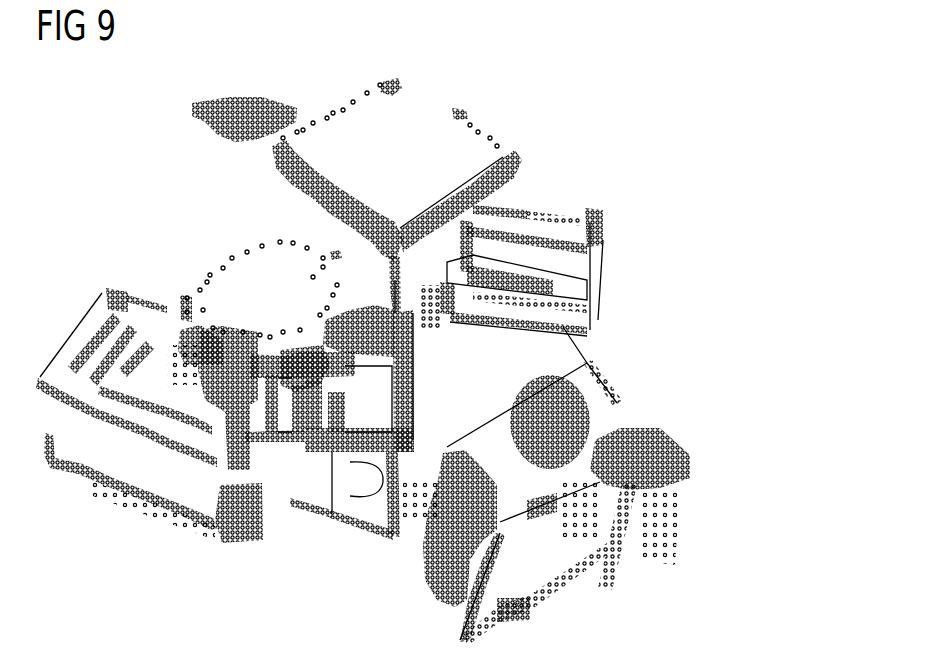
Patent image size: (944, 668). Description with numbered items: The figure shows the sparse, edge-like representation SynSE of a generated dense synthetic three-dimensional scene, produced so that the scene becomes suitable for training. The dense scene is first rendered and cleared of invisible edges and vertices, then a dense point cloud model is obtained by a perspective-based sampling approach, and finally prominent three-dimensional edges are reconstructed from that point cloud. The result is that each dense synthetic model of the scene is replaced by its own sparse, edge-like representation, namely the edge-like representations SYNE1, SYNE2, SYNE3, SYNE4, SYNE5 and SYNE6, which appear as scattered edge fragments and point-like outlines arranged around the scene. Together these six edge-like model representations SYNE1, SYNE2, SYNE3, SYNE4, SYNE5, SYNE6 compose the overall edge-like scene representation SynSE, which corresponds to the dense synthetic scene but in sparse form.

The edge-like representation of the synthetic 3D scene SynSE is at (632, 55).
The edge-like representation of a synthetic 3D model SYNE1 is at (478, 88).
The edge-like representation of a synthetic 3D model SYNE2 is at (620, 196).
The edge-like representation of a synthetic 3D model SYNE3 is at (450, 616).
The edge-like representation of a synthetic 3D model SYNE4 is at (310, 515).
The edge-like representation of a synthetic 3D model SYNE5 is at (140, 508).
The edge-like representation of a synthetic 3D model SYNE6 is at (242, 250).